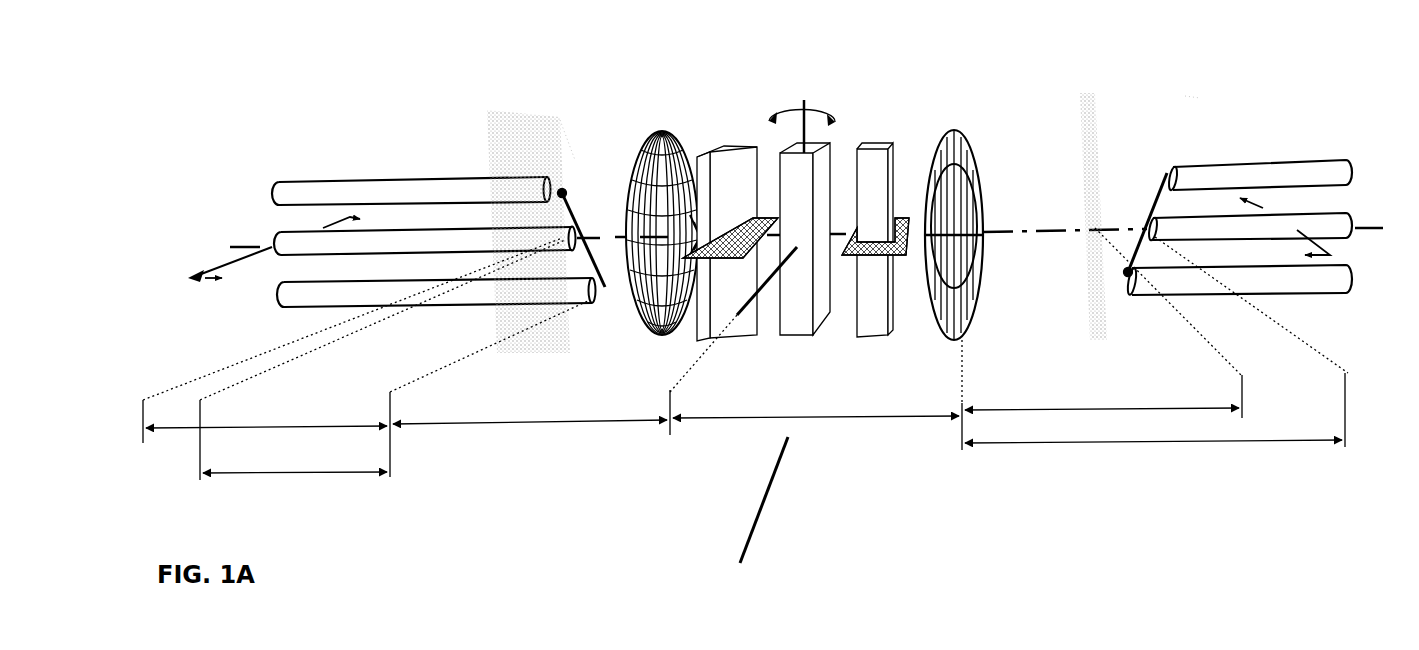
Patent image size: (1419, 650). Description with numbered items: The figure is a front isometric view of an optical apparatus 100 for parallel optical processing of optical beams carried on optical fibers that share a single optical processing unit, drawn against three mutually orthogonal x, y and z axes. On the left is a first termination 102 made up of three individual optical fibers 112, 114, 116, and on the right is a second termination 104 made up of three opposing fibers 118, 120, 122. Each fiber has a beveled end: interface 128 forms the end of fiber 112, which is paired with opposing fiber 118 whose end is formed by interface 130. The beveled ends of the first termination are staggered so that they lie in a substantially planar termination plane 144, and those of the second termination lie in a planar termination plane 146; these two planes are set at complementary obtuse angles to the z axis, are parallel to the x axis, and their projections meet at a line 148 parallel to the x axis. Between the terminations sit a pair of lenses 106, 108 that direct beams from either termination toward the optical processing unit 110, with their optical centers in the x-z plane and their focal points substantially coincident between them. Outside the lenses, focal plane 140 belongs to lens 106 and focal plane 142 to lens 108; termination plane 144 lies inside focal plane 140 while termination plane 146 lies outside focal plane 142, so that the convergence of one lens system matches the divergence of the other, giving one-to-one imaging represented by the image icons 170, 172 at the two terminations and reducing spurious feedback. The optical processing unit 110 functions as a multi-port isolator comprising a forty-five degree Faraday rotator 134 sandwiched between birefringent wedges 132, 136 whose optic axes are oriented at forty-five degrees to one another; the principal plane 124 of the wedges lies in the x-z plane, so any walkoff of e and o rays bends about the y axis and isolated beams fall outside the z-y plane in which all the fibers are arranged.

The optical apparatus 100 is at (935, 535).
The first termination 102 is at (372, 130).
The second termination 104 is at (1262, 112).
The lens 106 is at (680, 130).
The lens 108 is at (933, 130).
The optical processing unit 110 is at (908, 83).
The optical fiber 112 is at (353, 292).
The optical fiber 114 is at (393, 235).
The optical fiber 116 is at (413, 192).
The optical fiber 118 is at (1302, 167).
The optical fiber 120 is at (1302, 223).
The optical fiber 122 is at (1332, 282).
The principal plane 124 is at (747, 250).
The interface 128 is at (597, 300).
The interface 130 is at (1173, 170).
The birefringent wedge 132 is at (723, 150).
The Faraday rotator 134 is at (822, 167).
The birefringent wedge 136 is at (867, 140).
The focal plane 140 is at (497, 162).
The focal plane 142 is at (1090, 120).
The termination plane 144 is at (563, 168).
The termination plane 146 is at (1193, 107).
The line 148 is at (752, 525).
The image icon 170 is at (566, 193).
The image icon 172 is at (1124, 273).